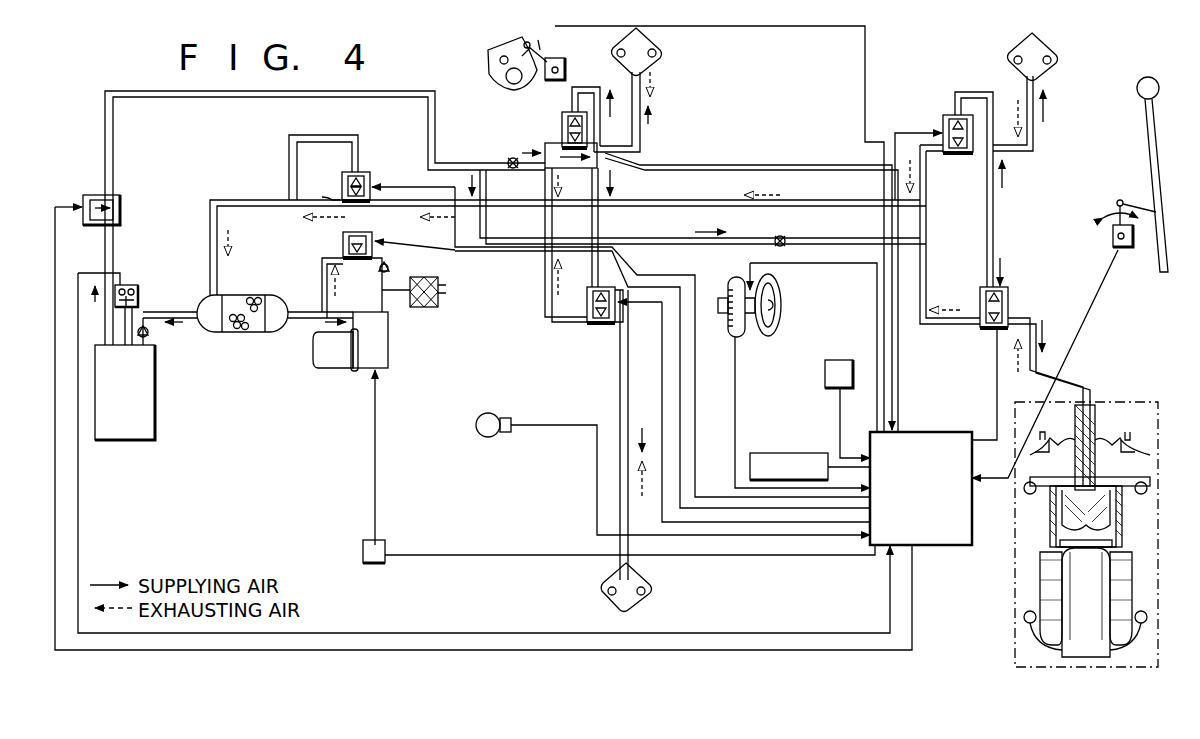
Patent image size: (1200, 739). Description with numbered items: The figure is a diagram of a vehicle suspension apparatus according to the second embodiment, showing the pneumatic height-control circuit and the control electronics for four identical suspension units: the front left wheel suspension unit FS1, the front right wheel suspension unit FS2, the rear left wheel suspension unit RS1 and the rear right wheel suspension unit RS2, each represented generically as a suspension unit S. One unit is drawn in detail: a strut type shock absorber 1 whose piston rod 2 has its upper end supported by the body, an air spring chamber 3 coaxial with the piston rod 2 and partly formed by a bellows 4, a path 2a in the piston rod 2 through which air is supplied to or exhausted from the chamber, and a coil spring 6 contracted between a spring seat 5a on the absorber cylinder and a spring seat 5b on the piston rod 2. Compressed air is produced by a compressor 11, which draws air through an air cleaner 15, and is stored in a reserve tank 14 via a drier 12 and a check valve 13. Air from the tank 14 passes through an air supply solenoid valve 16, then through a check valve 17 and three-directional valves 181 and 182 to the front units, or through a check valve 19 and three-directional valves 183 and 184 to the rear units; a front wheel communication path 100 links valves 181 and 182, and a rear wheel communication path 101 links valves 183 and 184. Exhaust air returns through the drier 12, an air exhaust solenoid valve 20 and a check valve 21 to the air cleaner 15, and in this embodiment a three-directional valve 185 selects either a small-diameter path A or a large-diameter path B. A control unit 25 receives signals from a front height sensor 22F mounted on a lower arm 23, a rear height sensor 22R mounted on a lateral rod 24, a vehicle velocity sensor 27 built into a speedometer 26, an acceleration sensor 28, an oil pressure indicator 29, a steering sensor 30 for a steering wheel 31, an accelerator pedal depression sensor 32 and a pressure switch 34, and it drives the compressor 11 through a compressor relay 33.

The strut type shock absorber 1 is at (1094, 652).
The piston rod 2 is at (1106, 522).
The path 2a is at (1092, 390).
The air spring chamber 3 is at (1116, 550).
The bellows 4 is at (1132, 582).
The spring seat 5a is at (1113, 644).
The spring seat 5b is at (1140, 434).
The coil spring 6 is at (1148, 482).
The compressor 11 is at (383, 366).
The drier 12 is at (262, 342).
The check valve 13 is at (148, 338).
The reserve tank 14 is at (155, 402).
The air cleaner 15 is at (420, 308).
The air supply solenoid valve 16 is at (120, 204).
The check valve 17 is at (508, 160).
The check valve 19 is at (782, 236).
The air exhaust solenoid valve 20 is at (370, 232).
The check valve 21 is at (388, 268).
The front height sensor 22F is at (545, 90).
The rear height sensor 22R is at (1110, 248).
The lower arm 23 is at (496, 78).
The lateral rod 24 is at (1154, 181).
The control unit 25 is at (916, 430).
The speedometer 26 is at (730, 278).
The vehicle velocity sensor 27 is at (728, 338).
The acceleration (G) sensor 28 is at (830, 360).
The indicator (OIL) 29 is at (796, 453).
The steering sensor 30 is at (754, 332).
The steering wheel 31 is at (782, 302).
The accelerator pedal depression sensor 32 is at (498, 422).
The compressor relay 33 is at (382, 542).
The pressure switch 34 is at (140, 298).
The front wheel communication path 100 is at (601, 218).
The rear wheel communication path 101 is at (993, 212).
The three-directional valve 181 is at (586, 324).
The three-directional valve 182 is at (562, 132).
The three-directional valve 183 is at (1008, 300).
The three-directional valve 184 is at (944, 116).
The three-directional valve 185 is at (374, 174).
The small-diameter path A is at (326, 200).
The large-diameter path B is at (334, 136).
The front left wheel suspension unit FS1 is at (658, 588).
The front right wheel suspension unit FS2 is at (657, 68).
The rear left wheel suspension unit RS1 is at (1132, 404).
The rear right wheel suspension unit RS2 is at (1056, 62).
The suspension unit S is at (642, 598).